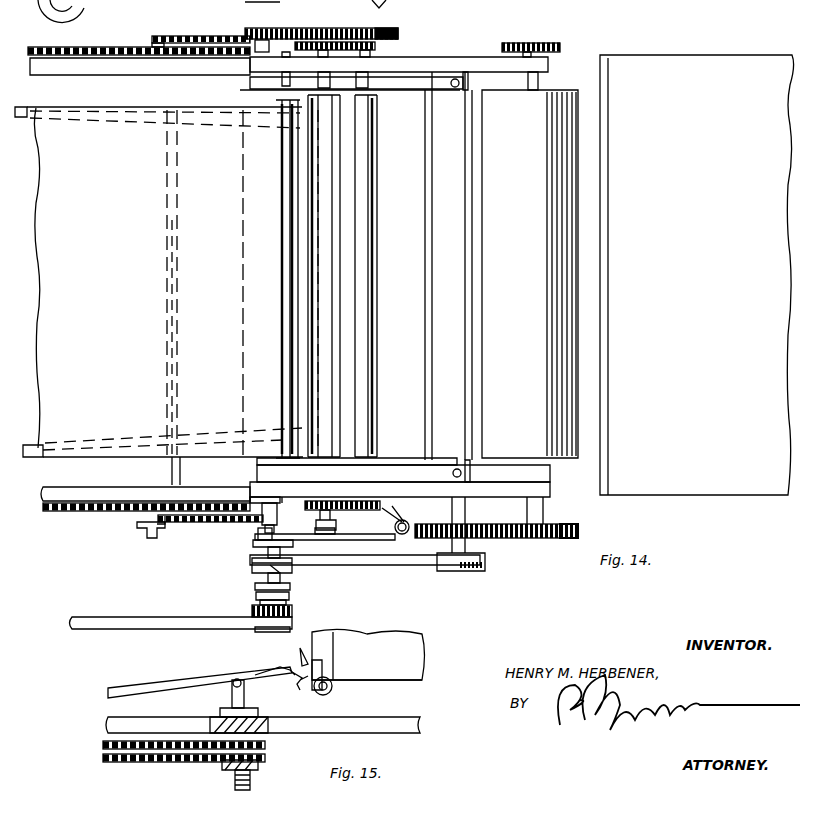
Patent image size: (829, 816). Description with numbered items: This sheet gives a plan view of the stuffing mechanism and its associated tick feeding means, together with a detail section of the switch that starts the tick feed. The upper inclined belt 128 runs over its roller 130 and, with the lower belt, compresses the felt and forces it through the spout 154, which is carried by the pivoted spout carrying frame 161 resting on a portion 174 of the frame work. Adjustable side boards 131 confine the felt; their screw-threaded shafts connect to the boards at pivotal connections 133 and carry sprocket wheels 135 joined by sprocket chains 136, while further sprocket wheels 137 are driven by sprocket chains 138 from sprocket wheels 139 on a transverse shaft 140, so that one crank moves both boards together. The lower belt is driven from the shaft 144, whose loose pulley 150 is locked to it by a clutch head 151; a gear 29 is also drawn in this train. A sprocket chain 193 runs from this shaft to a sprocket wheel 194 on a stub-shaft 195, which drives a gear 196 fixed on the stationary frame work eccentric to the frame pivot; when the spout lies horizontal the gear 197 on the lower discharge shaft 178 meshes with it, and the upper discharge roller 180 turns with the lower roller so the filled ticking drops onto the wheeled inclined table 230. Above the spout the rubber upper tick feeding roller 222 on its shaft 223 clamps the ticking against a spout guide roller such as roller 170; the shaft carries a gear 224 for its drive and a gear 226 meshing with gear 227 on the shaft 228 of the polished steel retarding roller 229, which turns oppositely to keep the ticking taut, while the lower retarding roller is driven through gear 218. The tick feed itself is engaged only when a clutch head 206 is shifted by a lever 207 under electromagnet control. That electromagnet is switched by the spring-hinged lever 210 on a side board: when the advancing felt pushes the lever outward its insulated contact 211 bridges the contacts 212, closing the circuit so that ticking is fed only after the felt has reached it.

In FIG. 14, the gear 29 is at (342, 507).
In FIG. 14, the inclined belt 128 is at (159, 282).
In FIG. 14, the roller 130 is at (242, 313).
In FIG. 14, the side board 131 is at (136, 120).
In FIG. 15, the pivotal connection 133 is at (215, 675).
In FIG. 15, the sprocket wheel 135 is at (268, 747).
In FIG. 14, the sprocket chain 136 is at (100, 47).
In FIG. 15, the sprocket chain 136 is at (263, 725).
In FIG. 15, the sprocket wheel 137 is at (260, 760).
In FIG. 14, the sprocket chain 138 is at (215, 31).
In FIG. 15, the sprocket chain 138 is at (122, 762).
In FIG. 14, the sprocket wheel 139 is at (168, 42).
In FIG. 14, the transverse shaft 140 is at (178, 408).
In FIG. 14, the shaft 144 is at (282, 573).
In FIG. 14, the pulley 150 is at (292, 608).
In FIG. 14, the clutch head 151 is at (250, 607).
In FIG. 14, the spout 154 is at (428, 266).
In FIG. 15, the spout 154 is at (391, 640).
In FIG. 14, the spout carrying frame 161 is at (351, 266).
In FIG. 15, the guide roller 170 is at (335, 676).
In FIG. 14, the portion of the frame work 174 is at (466, 58).
In FIG. 14, the shaft 178 is at (545, 513).
In FIG. 14, the upper discharge roller 180 is at (530, 274).
In FIG. 14, the sprocket chain 193 is at (402, 566).
In FIG. 14, the sprocket wheel 194 is at (468, 572).
In FIG. 14, the stub-shaft 195 is at (466, 549).
In FIG. 14, the gear 196 is at (492, 540).
In FIG. 14, the gear 197 is at (570, 539).
In FIG. 14, the clutch head 206 is at (286, 529).
In FIG. 14, the lever 207 is at (345, 538).
In FIG. 15, the lever 210 is at (306, 652).
In FIG. 15, the contact 211 is at (300, 688).
In FIG. 15, the contact 212 is at (268, 668).
In FIG. 14, the gear 218 is at (392, 507).
In FIG. 14, the upper tick feeding roller 222 is at (325, 195).
In FIG. 14, the shaft 223 is at (312, 93).
In FIG. 14, the gear 224 is at (392, 24).
In FIG. 14, the gear 226 is at (312, 35).
In FIG. 14, the gear 227 is at (378, 47).
In FIG. 14, the shaft 228 is at (365, 66).
In FIG. 14, the retarding roller 229 is at (370, 147).
In FIG. 14, the inclined table 230 is at (697, 275).